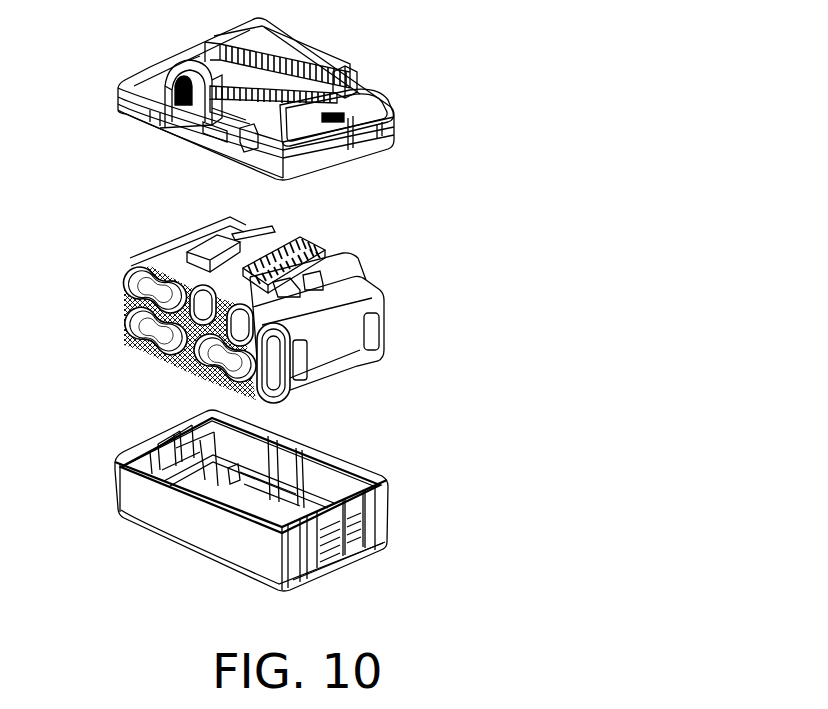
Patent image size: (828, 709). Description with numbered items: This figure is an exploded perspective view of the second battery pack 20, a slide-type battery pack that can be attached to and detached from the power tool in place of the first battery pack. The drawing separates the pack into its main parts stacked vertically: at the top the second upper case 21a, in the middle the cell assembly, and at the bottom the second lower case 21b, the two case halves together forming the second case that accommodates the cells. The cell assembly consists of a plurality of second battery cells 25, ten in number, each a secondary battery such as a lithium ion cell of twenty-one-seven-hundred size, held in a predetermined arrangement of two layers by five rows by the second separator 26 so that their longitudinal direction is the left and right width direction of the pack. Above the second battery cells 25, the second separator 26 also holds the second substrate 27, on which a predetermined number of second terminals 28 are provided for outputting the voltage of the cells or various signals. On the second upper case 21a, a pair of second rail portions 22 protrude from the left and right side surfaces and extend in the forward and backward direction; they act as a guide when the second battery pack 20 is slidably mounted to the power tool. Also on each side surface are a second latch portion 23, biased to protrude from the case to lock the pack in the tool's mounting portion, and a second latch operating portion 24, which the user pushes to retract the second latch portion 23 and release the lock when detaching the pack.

The second battery pack 20 is at (526, 614).
The second upper case 21a is at (256, 99).
The second lower case 21b is at (392, 506).
The second rail portion 22 is at (352, 70).
The second latch portion 23 is at (228, 145).
The second latch operating portion 24 is at (178, 118).
The second battery cell 25 is at (127, 322).
The second separator 26 is at (140, 256).
The second substrate 27 is at (205, 227).
The second terminal 28 is at (312, 254).